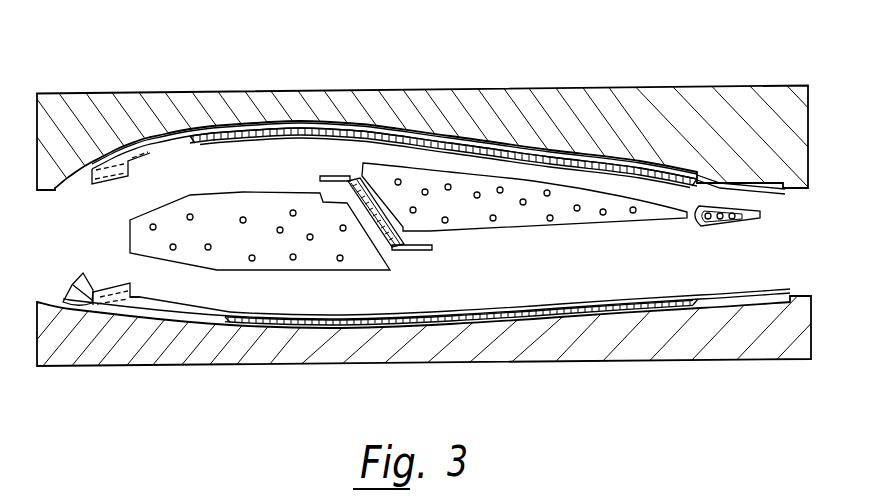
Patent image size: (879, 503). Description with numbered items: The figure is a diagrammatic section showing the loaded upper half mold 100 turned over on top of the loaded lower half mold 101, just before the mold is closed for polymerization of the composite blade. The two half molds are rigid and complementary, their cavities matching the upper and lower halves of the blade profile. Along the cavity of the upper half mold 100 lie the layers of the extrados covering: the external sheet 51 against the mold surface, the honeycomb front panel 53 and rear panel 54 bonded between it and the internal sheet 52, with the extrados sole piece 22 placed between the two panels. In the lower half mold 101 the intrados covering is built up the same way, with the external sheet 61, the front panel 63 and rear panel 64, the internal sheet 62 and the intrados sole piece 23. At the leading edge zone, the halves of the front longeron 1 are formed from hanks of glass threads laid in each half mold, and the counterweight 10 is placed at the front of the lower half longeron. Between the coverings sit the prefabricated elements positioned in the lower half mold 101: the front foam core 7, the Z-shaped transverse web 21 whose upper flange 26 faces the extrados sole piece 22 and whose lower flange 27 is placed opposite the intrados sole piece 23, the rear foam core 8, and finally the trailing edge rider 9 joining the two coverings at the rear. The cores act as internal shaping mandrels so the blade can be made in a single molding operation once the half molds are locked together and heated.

The front longeron 1 is at (115, 290).
The front filling core 7 is at (225, 212).
The rear filling core 8 is at (516, 222).
The trailing edge rider 9 is at (698, 227).
The counterweight 10 is at (75, 284).
The transverse web 21 is at (378, 186).
The extrados sole piece 22 is at (345, 124).
The intrados sole piece 23 is at (420, 315).
The upper flange 26 is at (352, 174).
The lower flange 27 is at (412, 251).
The external sheet 51 is at (483, 147).
The internal sheet 52 is at (275, 139).
The front panel 53 is at (240, 130).
The rear panel 54 is at (540, 157).
The external sheet 61 is at (257, 325).
The internal sheet 62 is at (289, 312).
The front panel 63 is at (340, 324).
The rear panel 64 is at (530, 314).
The upper half mold 100 is at (660, 105).
The lower half mold 101 is at (700, 340).